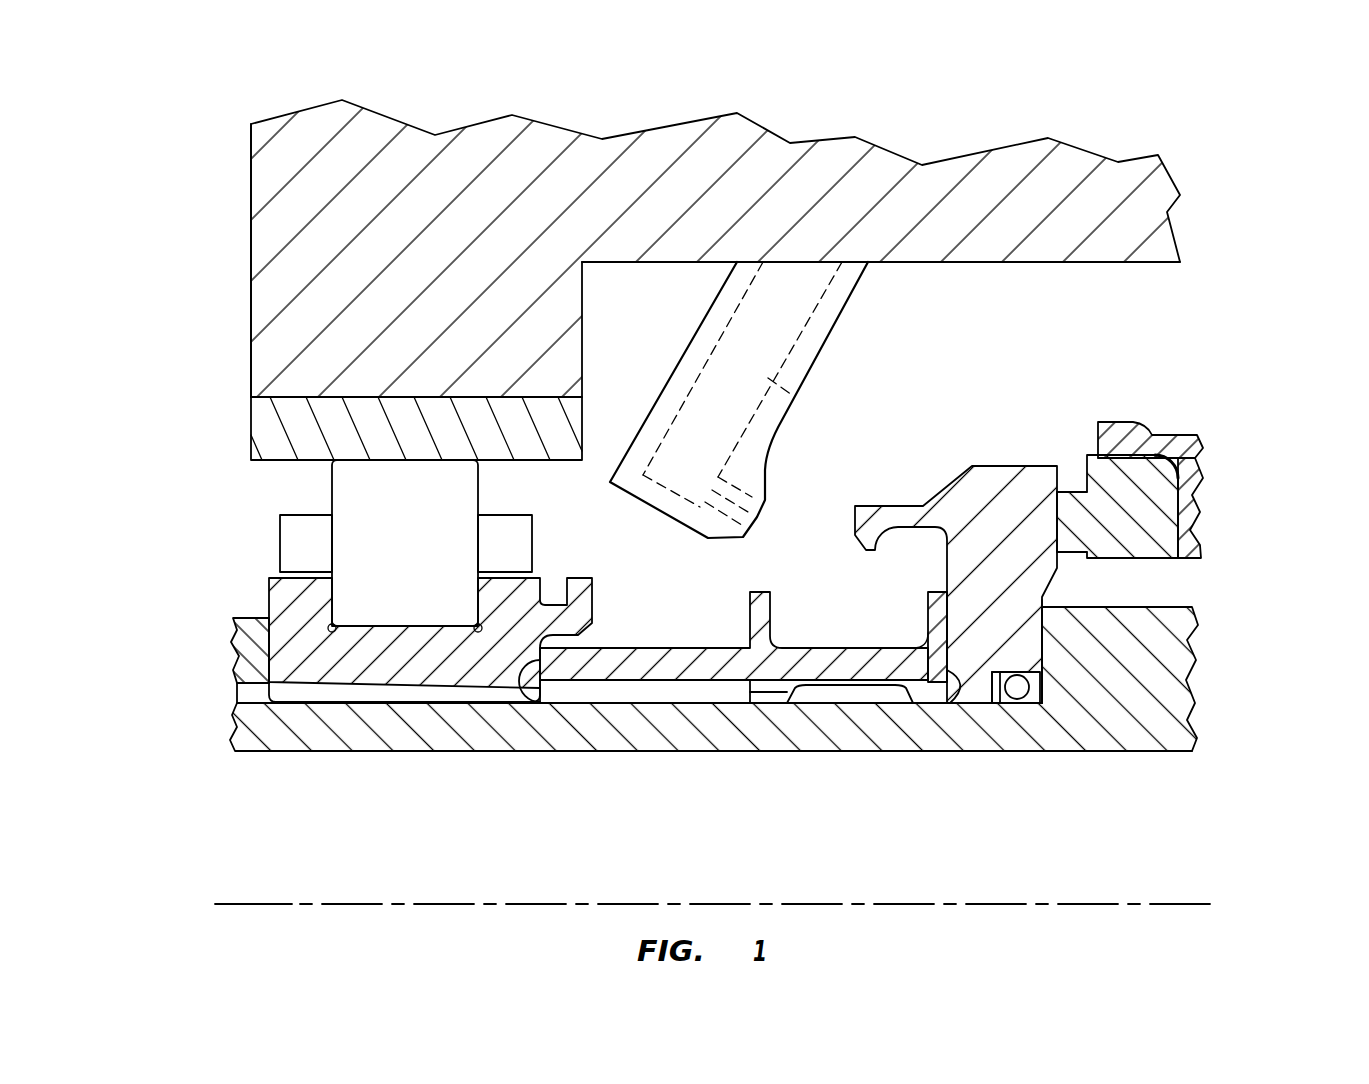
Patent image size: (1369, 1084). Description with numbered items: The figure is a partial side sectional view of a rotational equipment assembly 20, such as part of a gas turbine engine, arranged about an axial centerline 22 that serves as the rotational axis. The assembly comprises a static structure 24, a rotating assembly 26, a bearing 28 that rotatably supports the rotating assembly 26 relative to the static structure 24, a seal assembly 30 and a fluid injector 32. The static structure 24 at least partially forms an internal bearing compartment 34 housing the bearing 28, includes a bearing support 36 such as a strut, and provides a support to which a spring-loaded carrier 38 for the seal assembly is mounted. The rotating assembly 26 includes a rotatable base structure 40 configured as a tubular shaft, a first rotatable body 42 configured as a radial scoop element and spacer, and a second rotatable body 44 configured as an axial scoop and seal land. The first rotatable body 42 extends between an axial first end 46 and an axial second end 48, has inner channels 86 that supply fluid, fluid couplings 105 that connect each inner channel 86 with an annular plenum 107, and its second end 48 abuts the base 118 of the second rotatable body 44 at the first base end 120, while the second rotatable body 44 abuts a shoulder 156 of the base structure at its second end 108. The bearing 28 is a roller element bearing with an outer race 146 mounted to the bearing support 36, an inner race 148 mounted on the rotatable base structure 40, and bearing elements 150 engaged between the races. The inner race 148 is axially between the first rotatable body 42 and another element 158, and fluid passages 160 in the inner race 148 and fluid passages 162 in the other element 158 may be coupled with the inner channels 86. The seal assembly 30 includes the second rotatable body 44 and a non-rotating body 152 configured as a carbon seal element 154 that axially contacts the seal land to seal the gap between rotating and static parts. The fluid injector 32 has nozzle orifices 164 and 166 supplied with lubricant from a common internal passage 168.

The rotational equipment assembly 20 is at (158, 132).
The axial centerline 22 is at (1215, 900).
The static structure 24 is at (315, 105).
The rotating assembly 26 is at (218, 752).
The bearing 28 is at (238, 563).
The seal assembly 30 is at (1063, 433).
The fluid injector 32 is at (838, 356).
The internal bearing compartment 34 is at (1014, 306).
The bearing support 36 is at (250, 325).
The carrier 38 is at (1177, 430).
The rotatable base structure 40 is at (1198, 677).
The first rotatable body 42 is at (663, 643).
The second rotatable body 44 is at (960, 465).
The axial first end 46 is at (521, 665).
The axial second end 48 is at (963, 698).
The inner channel 86 is at (832, 693).
The fluid coupling 105 is at (770, 697).
The annular plenum 107 is at (643, 690).
The axial second end 108 is at (1060, 563).
The base 118 is at (1003, 672).
The first base end 120 is at (928, 650).
The outer race 146 is at (250, 422).
The inner race 148 is at (268, 598).
The bearing elements 150 is at (330, 482).
The non-rotating body 152 is at (1150, 565).
The seal element 154 is at (1249, 528).
The shoulder 156 is at (1062, 663).
The other element 158 is at (218, 663).
The fluid passages 160 is at (378, 700).
The fluid passages 162 is at (253, 690).
The nozzle orifice 164 is at (747, 532).
The nozzle orifice 166 is at (775, 513).
The common internal passage 168 is at (772, 383).